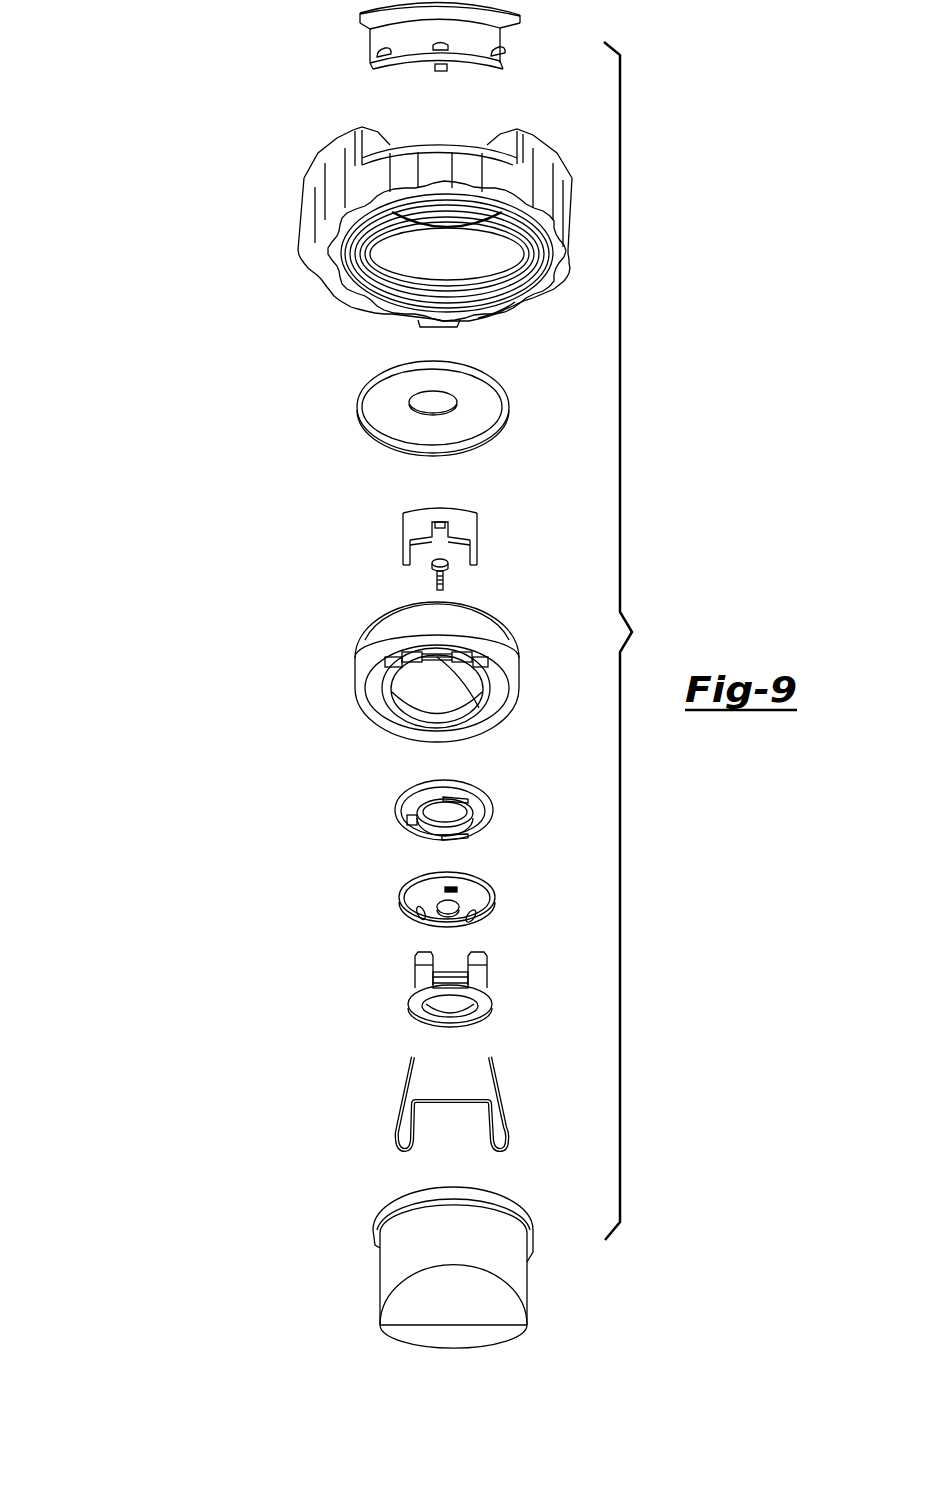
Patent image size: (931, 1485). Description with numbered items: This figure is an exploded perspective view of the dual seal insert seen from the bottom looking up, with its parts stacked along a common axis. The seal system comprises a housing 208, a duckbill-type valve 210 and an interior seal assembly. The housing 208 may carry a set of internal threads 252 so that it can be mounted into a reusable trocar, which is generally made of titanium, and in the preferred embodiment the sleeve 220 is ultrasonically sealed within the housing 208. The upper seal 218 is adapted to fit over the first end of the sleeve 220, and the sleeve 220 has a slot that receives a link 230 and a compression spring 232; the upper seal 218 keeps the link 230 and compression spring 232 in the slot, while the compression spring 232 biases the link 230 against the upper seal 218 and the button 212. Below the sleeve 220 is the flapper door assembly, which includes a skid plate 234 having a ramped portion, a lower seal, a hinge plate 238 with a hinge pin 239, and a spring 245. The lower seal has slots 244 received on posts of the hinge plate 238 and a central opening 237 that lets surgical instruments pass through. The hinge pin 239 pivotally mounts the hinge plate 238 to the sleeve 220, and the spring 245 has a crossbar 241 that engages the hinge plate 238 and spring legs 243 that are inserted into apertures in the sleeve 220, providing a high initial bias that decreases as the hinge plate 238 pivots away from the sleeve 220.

The housing 208 is at (268, 213).
The duckbill-type valve 210 is at (390, 1240).
The button 212 is at (498, 37).
The upper seal 218 is at (320, 404).
The sleeve 220 is at (335, 650).
The link 230 is at (468, 525).
The compression spring 232 is at (448, 578).
The skid plate 234 is at (378, 808).
The central opening 237 is at (447, 907).
The hinge plate 238 is at (505, 1003).
The hinge pin 239 is at (480, 708).
The crossbar 241 is at (453, 1096).
The spring legs 243 is at (412, 1061).
The slots 244 is at (455, 890).
The spring clip 245 is at (460, 1088).
The internal threads 252 is at (485, 308).